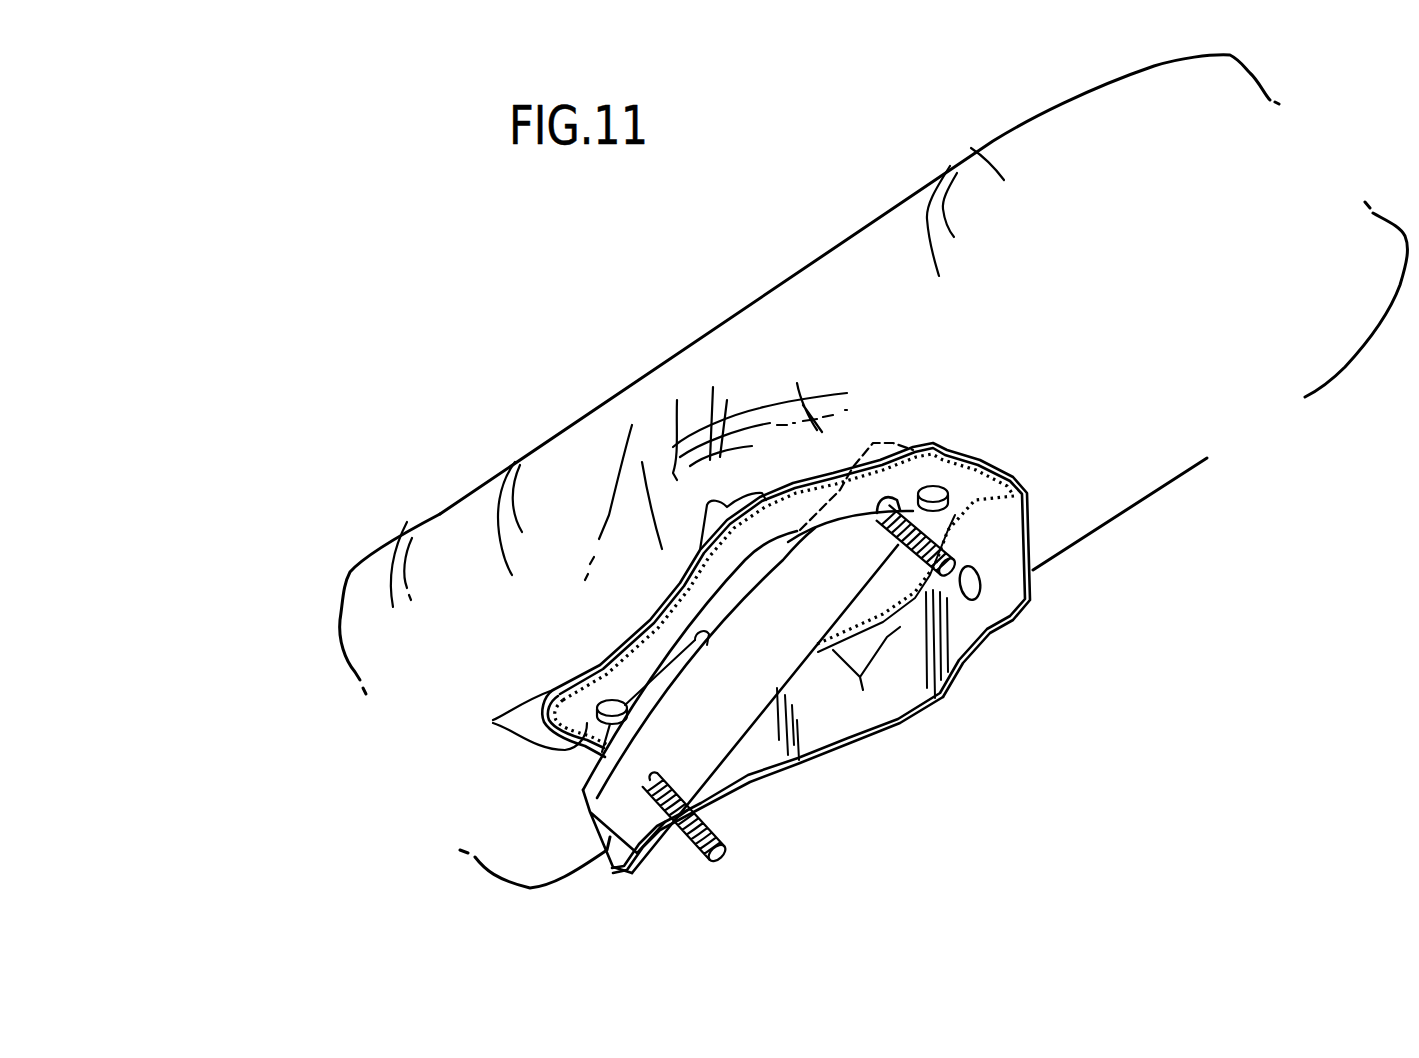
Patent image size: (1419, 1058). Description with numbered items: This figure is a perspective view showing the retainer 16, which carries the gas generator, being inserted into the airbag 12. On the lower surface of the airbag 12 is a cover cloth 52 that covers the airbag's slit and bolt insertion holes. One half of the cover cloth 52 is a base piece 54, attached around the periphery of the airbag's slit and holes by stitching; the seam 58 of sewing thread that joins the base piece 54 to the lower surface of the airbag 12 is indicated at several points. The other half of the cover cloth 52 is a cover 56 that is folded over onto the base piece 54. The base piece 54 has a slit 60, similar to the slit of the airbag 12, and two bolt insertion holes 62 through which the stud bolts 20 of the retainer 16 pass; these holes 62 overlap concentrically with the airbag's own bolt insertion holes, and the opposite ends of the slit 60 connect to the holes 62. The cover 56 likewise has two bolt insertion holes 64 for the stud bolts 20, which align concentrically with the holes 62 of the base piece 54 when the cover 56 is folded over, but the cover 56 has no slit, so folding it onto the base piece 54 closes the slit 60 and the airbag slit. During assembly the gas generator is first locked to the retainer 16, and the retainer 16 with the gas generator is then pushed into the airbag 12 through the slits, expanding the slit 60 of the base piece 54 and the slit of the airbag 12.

The airbag 12 is at (986, 141).
The retainer 16 is at (733, 720).
The stud bolt 20 is at (947, 562).
The cover cloth 52 is at (971, 417).
The base piece 54 is at (680, 583).
The cover 56 is at (943, 697).
The seam 58 is at (680, 611).
The slit 60 is at (695, 641).
The bolt insertion hole 62 is at (960, 497).
The bolt insertion hole 64 is at (982, 587).